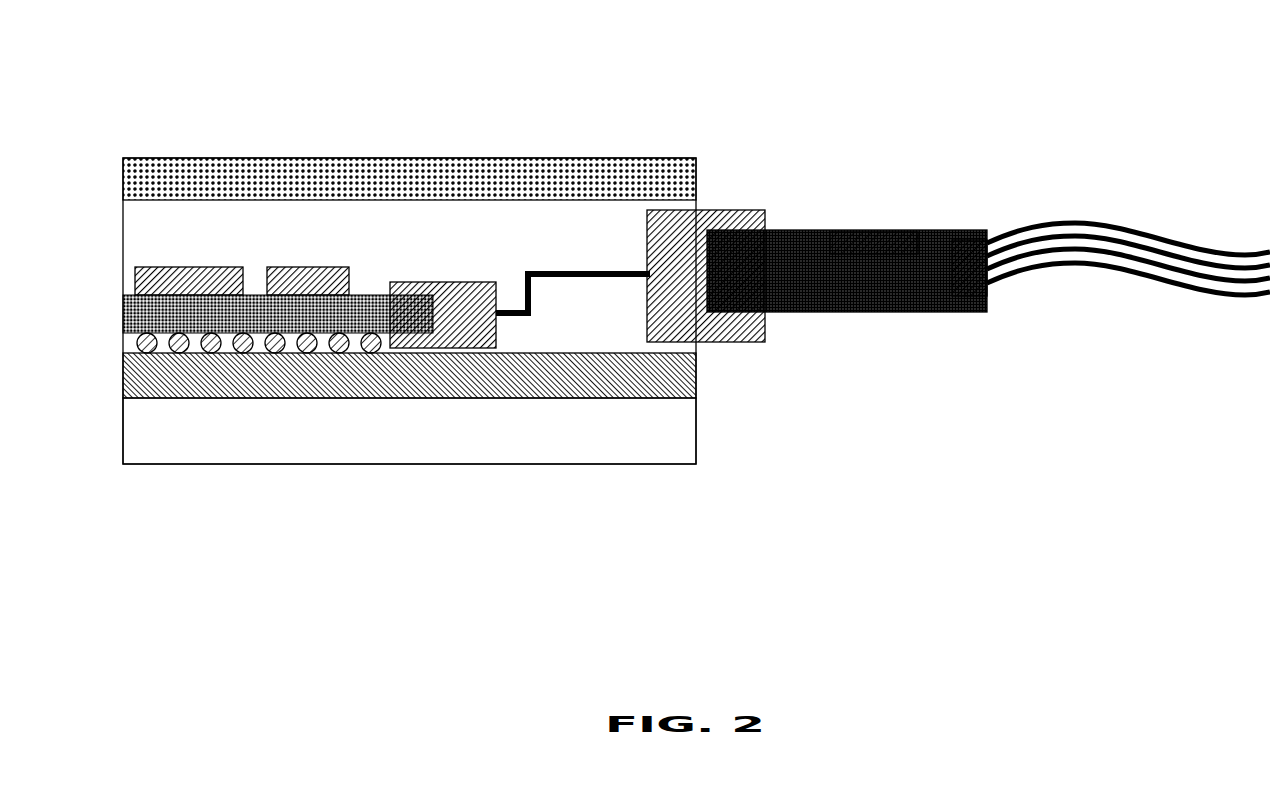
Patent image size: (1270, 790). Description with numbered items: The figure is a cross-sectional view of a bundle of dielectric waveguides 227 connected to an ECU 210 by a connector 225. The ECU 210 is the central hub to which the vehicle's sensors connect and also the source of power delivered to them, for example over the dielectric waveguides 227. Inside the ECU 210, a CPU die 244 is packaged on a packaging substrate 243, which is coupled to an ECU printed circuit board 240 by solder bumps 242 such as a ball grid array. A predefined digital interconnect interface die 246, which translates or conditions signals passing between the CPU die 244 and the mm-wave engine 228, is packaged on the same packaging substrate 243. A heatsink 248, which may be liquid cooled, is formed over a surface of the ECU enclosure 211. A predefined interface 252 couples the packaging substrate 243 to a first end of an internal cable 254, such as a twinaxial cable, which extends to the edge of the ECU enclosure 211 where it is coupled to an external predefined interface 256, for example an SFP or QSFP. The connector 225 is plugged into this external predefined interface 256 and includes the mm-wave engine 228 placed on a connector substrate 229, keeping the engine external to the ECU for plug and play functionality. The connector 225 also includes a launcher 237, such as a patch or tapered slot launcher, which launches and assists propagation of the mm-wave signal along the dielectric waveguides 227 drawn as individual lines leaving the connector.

The ECU 210 is at (280, 88).
The ECU enclosure 211 is at (640, 465).
The ECU printed circuit board 240 is at (553, 385).
The solder bumps 242 is at (278, 353).
The packaging substrate 243 is at (375, 295).
The CPU die 244 is at (165, 267).
The predefined digital interconnect interface die 246 is at (278, 267).
The heatsink 248 is at (580, 183).
The predefined interface 252 is at (458, 282).
The internal cable 254 is at (597, 272).
The external predefined interface 256 is at (740, 209).
The connector 225 is at (868, 279).
The mm-wave engine 228 is at (857, 232).
The connector substrate 229 is at (808, 312).
The launcher 237 is at (991, 307).
The dielectric waveguides 227 is at (1058, 270).